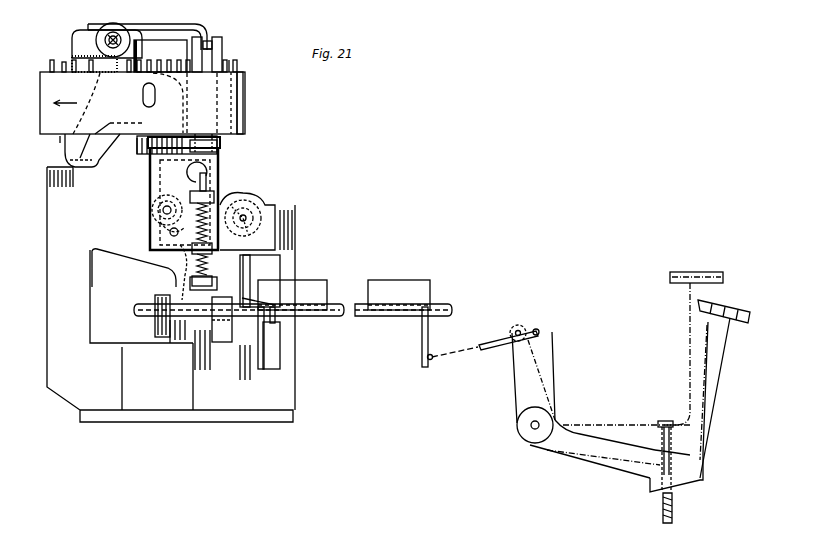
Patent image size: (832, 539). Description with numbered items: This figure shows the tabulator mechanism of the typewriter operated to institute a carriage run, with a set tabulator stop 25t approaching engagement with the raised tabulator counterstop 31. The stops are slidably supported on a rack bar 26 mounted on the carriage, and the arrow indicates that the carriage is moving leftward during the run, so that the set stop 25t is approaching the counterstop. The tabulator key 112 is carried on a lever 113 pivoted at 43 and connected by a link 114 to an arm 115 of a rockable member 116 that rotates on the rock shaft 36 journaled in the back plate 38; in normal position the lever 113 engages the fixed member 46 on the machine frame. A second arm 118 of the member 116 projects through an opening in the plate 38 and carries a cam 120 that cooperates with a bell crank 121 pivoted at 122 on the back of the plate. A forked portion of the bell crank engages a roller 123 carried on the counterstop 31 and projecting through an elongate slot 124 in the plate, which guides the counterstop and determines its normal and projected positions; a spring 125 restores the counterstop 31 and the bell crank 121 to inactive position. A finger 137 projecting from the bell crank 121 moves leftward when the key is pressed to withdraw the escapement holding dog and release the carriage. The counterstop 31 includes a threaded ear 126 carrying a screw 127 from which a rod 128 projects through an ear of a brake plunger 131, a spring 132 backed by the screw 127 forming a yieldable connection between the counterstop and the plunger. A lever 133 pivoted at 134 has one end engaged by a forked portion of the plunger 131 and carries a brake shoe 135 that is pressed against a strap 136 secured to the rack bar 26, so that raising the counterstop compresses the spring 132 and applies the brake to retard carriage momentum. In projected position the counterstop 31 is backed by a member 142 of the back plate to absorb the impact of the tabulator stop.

The rack bar 26 is at (70, 122).
The member of the back plate 142 is at (149, 108).
The pivot 134 is at (160, 56).
The brake shoe 135 is at (72, 56).
The lever 133 is at (86, 33).
The brake plunger 131 is at (222, 44).
The set tabulator stop 25t is at (231, 60).
The strap 136 is at (246, 73).
The back plate 38 is at (97, 388).
The tabulator counterstop 31 is at (212, 174).
The rod 128 is at (201, 169).
The bell crank 121 is at (218, 193).
The roller 123 is at (153, 203).
The elongate slot 124 is at (160, 225).
The spring 132 is at (189, 263).
The pivot 122 is at (250, 230).
The spring 125 is at (170, 273).
The threaded ear 126 is at (217, 257).
The screw 127 is at (203, 289).
The finger 137 is at (205, 324).
The rock shaft 36 is at (320, 318).
The cam 120 is at (238, 325).
The second arm 118 is at (258, 365).
The rockable member 116 is at (412, 287).
The arm 115 is at (422, 332).
The link 114 is at (499, 350).
The pivot 43 is at (535, 425).
The lever 113 is at (717, 358).
The tabulator key 112 is at (733, 302).
The fixed member 46 is at (670, 420).